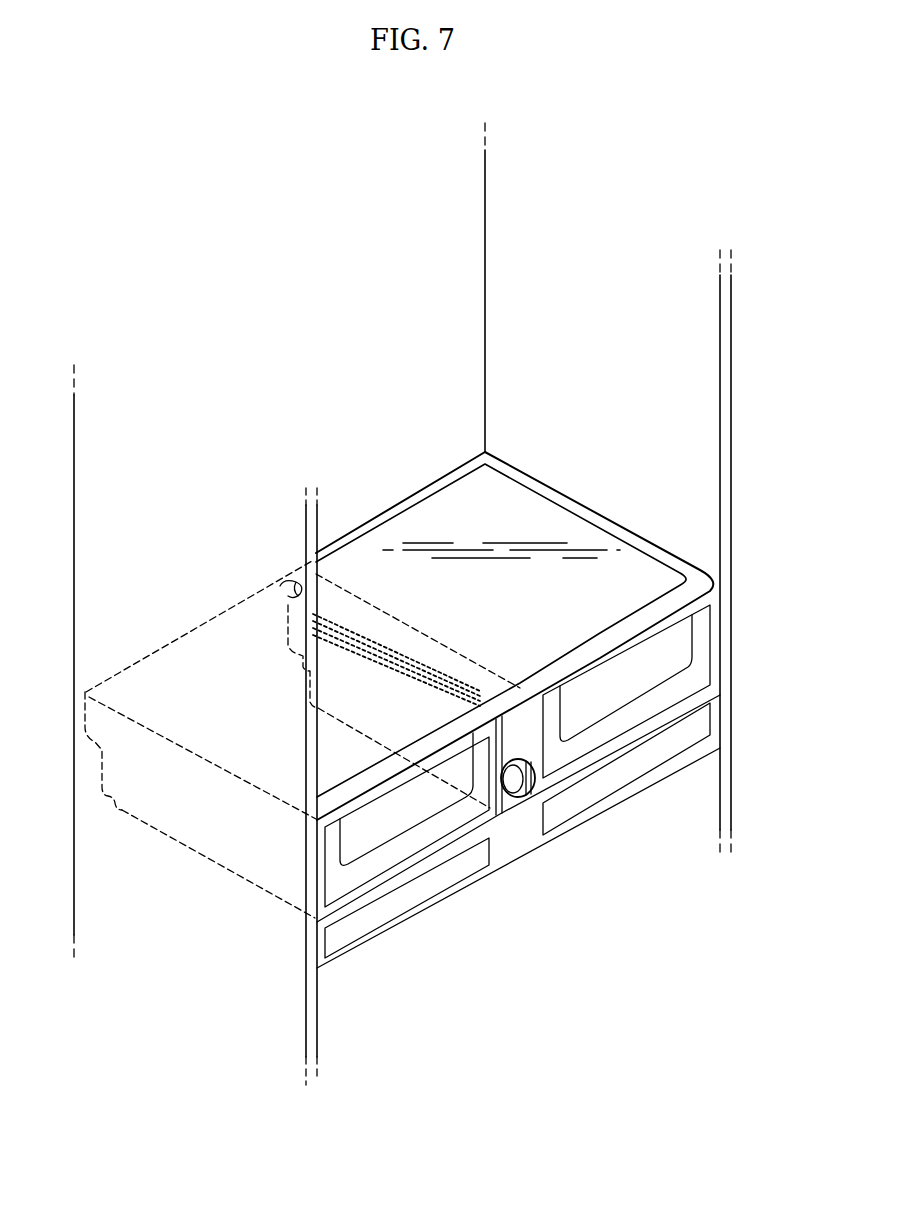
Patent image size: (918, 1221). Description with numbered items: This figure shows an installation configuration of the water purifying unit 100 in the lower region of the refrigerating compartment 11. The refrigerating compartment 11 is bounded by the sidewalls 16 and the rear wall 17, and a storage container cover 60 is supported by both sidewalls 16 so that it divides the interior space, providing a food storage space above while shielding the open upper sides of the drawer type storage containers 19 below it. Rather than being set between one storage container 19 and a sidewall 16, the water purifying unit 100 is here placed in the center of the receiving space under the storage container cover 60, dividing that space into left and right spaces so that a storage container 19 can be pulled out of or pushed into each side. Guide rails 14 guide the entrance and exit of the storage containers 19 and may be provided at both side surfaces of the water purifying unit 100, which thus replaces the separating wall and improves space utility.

The refrigerating compartment 11 is at (580, 458).
The guide rails 14 is at (402, 669).
The sidewalls 16 is at (685, 375).
The rear wall 17 is at (478, 347).
The drawer type storage container 19 is at (703, 640).
The storage container cover 60 is at (652, 563).
The water purifying unit 100 is at (537, 790).